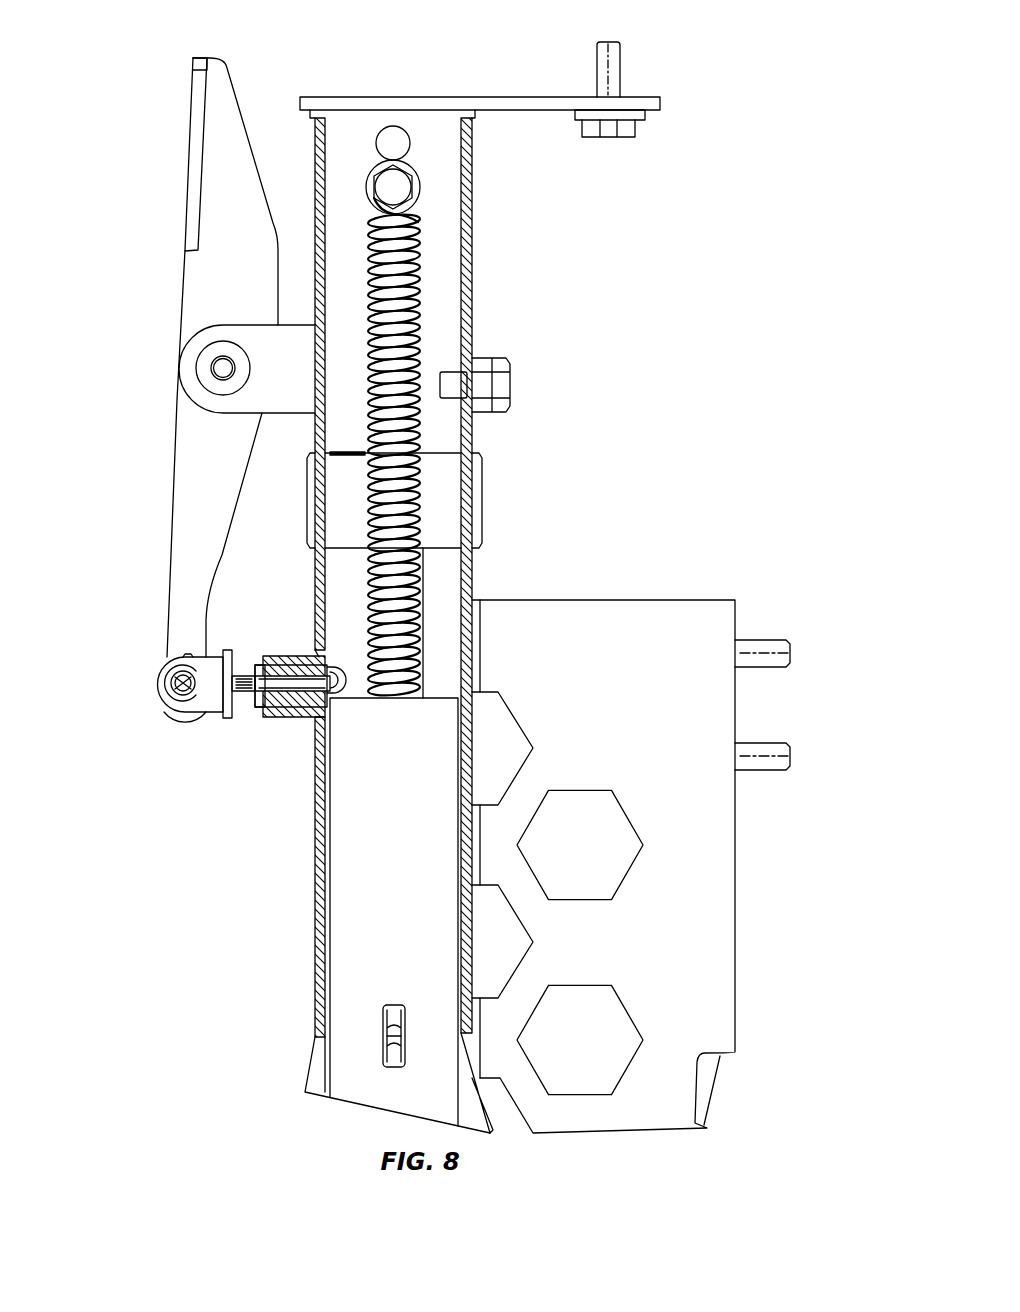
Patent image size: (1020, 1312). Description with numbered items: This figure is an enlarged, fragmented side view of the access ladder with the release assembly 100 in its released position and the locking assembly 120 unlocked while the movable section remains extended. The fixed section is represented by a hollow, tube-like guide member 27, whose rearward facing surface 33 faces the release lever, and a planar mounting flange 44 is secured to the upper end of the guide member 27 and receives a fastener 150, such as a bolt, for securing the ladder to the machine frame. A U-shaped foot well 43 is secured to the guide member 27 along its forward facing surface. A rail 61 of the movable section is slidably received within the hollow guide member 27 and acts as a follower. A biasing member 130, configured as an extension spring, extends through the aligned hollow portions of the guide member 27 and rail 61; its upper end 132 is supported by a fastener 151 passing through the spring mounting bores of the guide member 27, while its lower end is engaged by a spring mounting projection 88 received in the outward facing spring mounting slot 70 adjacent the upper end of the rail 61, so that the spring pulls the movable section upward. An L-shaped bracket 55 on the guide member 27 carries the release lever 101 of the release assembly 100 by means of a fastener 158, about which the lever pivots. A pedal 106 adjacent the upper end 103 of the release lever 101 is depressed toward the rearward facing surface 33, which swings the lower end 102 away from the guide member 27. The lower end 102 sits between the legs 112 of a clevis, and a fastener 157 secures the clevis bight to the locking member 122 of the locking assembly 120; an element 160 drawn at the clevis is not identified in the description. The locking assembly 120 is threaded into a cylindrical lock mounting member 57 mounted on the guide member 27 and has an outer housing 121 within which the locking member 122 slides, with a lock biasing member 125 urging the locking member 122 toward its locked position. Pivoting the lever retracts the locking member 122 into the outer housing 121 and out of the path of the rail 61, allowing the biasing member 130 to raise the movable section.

The release assembly 100 is at (142, 209).
The release lever 101 is at (185, 288).
The upper end 103 is at (202, 60).
The pedal 106 is at (193, 135).
The L-shaped bracket 55 is at (288, 353).
The fastener 158 is at (222, 369).
The fastener 157 is at (250, 678).
The clevis pin 160 is at (180, 687).
The lower end 102 is at (187, 720).
The legs 112 is at (227, 718).
The lock biasing member 125 is at (253, 742).
The locking assembly 120 is at (281, 650).
The locking member 122 is at (291, 685).
The cylindrical lock mounting member 57 is at (276, 652).
The outer housing 121 is at (283, 704).
The rearward facing surface 33 is at (315, 152).
The guide member 27 is at (467, 240).
The mounting flange 44 is at (525, 98).
The fastener 150 is at (614, 68).
The fastener 151 is at (389, 185).
The biasing member 130 is at (410, 327).
The upper end 132 is at (415, 228).
The foot well 43 is at (697, 615).
The rail 61 is at (347, 1007).
The outward facing spring mounting slot 70 is at (395, 1010).
The spring mounting projection 88 is at (397, 1037).